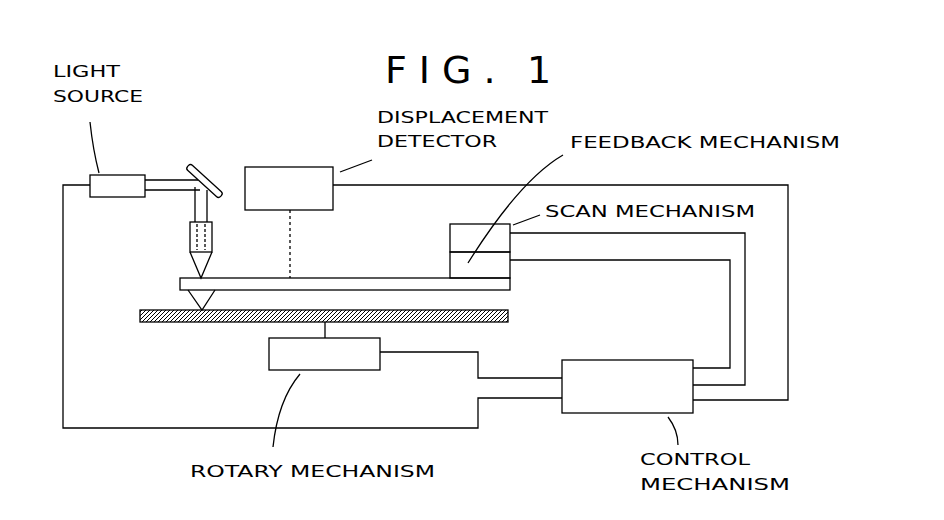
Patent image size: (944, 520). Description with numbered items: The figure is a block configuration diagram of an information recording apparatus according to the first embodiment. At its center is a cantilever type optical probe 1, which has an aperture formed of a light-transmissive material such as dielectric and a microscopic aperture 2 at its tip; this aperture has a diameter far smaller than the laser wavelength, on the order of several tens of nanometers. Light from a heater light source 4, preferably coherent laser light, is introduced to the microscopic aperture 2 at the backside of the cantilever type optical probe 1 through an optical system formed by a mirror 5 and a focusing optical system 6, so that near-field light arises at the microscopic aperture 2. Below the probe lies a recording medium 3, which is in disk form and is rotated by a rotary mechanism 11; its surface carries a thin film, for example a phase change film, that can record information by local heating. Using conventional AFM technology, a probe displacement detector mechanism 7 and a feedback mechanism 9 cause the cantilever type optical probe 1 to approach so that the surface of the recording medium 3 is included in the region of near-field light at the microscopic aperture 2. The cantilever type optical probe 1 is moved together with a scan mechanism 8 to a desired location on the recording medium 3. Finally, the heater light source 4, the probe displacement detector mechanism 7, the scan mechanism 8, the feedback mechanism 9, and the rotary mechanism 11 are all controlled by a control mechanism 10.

The cantilever type optical probe 1 is at (337, 278).
The microscopic aperture 2 is at (190, 308).
The recording medium 3 is at (177, 326).
The heater light source 4 is at (130, 175).
The mirror 5 is at (205, 166).
The focusing optical system 6 is at (190, 240).
The probe displacement detector mechanism 7 is at (279, 167).
The scan mechanism 8 is at (450, 238).
The feedback mechanism 9 is at (512, 266).
The control mechanism 10 is at (622, 360).
The rotary mechanism 11 is at (335, 372).